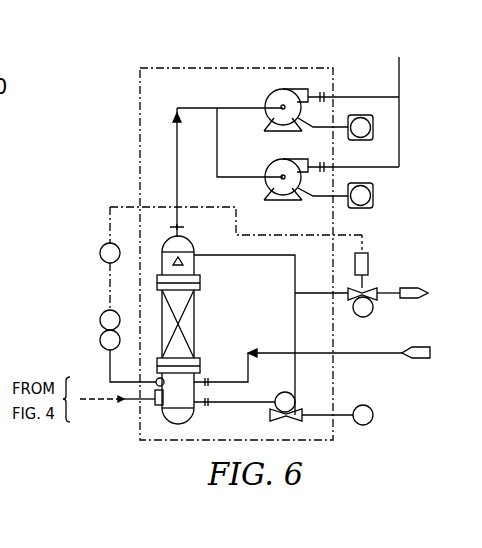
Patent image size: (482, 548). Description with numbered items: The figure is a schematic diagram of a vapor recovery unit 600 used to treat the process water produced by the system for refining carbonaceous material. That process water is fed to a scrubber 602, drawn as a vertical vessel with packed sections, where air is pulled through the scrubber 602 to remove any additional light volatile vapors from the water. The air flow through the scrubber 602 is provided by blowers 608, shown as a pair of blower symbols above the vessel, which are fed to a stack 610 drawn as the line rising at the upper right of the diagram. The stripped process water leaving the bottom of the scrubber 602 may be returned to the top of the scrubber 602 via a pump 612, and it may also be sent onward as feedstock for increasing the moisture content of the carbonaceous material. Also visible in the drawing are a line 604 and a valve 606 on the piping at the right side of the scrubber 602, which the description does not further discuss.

The vapor recovery unit 600 is at (427, 196).
The scrubber 602 is at (196, 300).
The line 604 is at (277, 350).
The valve 606 is at (393, 288).
The blowers 608 is at (288, 90).
The stack 610 is at (402, 72).
The pump 612 is at (297, 404).